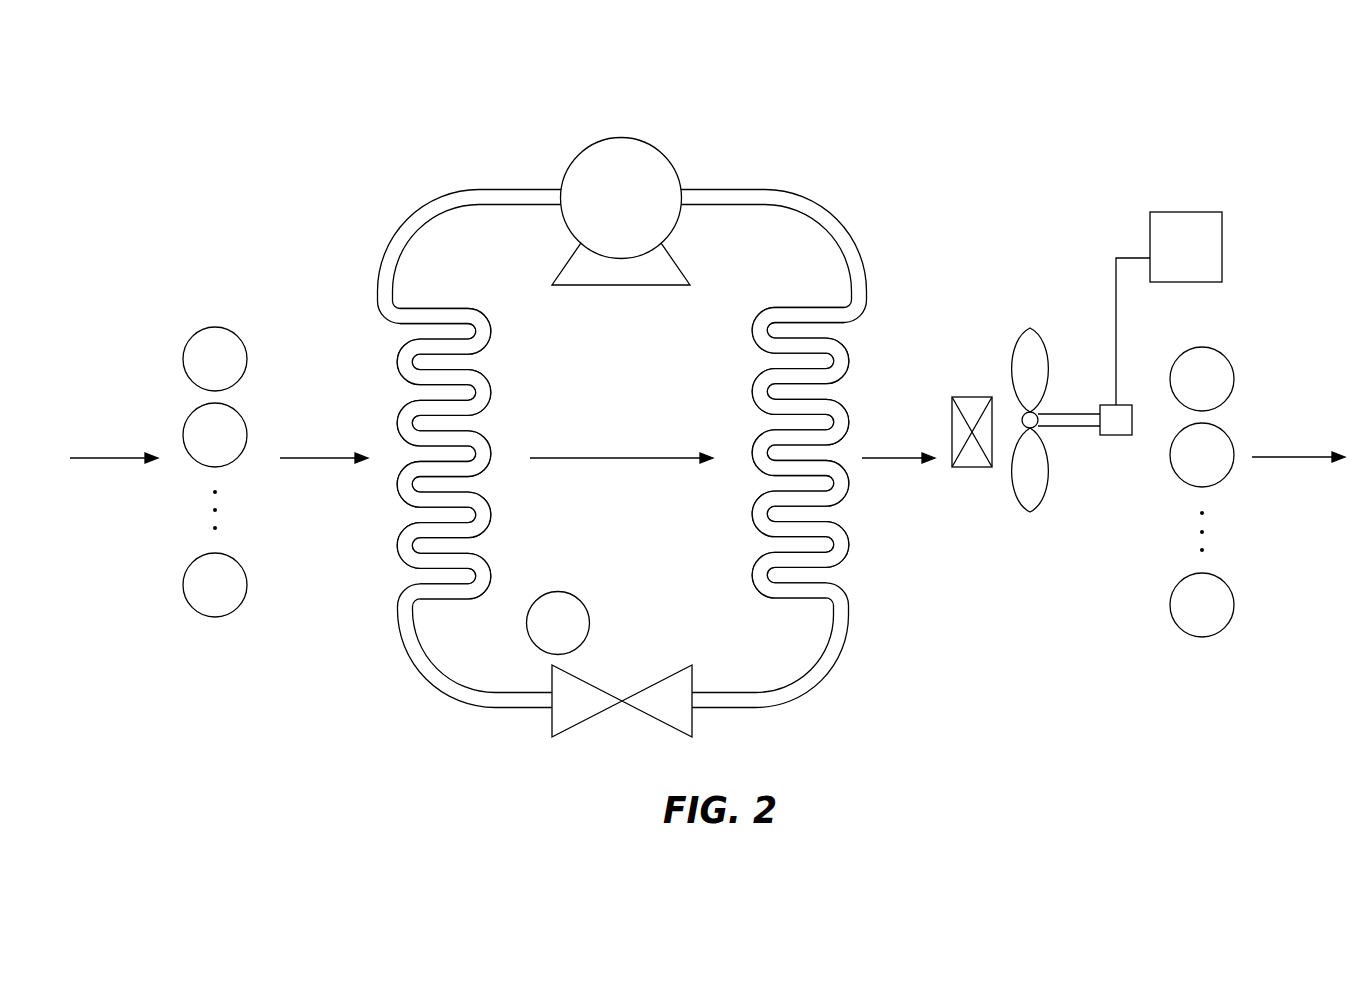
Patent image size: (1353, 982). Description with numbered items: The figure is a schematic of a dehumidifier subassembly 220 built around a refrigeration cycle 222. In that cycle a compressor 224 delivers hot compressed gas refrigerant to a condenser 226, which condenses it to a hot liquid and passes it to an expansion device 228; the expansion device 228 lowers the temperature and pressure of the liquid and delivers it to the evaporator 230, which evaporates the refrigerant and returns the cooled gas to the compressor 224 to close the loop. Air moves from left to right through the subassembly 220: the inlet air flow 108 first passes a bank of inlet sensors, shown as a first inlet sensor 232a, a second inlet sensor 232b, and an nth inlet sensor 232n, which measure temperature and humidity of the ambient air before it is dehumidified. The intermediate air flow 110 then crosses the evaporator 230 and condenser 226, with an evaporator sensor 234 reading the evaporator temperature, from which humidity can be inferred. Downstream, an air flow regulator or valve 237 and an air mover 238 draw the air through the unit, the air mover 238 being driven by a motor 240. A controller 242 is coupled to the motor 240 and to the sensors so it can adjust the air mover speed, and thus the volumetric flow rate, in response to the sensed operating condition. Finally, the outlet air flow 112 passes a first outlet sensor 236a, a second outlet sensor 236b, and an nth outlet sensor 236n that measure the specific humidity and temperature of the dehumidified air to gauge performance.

The inlet air flow 108 is at (100, 462).
The intermediate air flow 110 is at (320, 462).
The outlet air flow 112 is at (1295, 460).
The subassembly 220 is at (707, 394).
The refrigeration cycle 222 is at (627, 405).
The compressor 224 is at (628, 153).
The condenser 226 is at (840, 363).
The expansion device 228 is at (663, 694).
The evaporator 230 is at (408, 545).
The first inlet sensor 232a is at (227, 343).
The second inlet sensor 232b is at (227, 423).
The nth inlet sensor 232n is at (227, 594).
The evaporator sensor 234 is at (568, 606).
The first outlet sensor 236a is at (1213, 360).
The second outlet sensor 236b is at (1213, 437).
The nth outlet sensor 236n is at (1213, 613).
The air flow regulator or valve 237 is at (982, 397).
The air mover 238 is at (1025, 510).
The motor 240 is at (1115, 435).
The controller 242 is at (1214, 235).